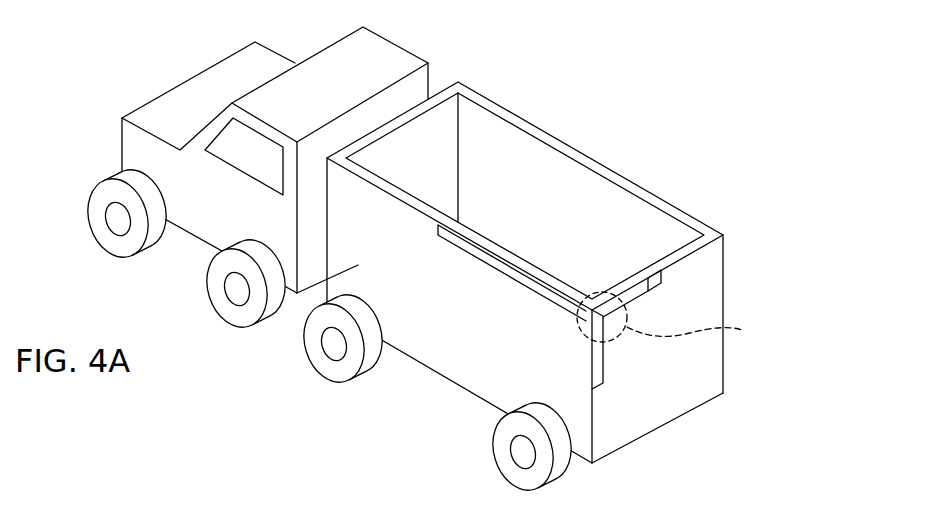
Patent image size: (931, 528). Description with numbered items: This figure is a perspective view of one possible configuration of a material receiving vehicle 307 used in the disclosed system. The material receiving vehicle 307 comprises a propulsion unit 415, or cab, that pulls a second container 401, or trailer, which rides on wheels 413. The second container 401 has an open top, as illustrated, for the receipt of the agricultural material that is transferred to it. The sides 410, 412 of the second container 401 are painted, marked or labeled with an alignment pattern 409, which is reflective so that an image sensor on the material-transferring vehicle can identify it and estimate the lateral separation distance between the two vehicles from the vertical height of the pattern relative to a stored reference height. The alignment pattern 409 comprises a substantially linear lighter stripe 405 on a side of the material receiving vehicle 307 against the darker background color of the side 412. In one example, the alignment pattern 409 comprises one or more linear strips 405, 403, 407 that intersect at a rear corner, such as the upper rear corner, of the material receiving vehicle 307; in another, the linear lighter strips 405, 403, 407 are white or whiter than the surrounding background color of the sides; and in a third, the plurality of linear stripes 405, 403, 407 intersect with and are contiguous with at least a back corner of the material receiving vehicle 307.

The material receiving vehicle 307 is at (548, 99).
The second container 401 is at (580, 212).
The linear strip 403 is at (598, 370).
The linear lighter stripe 405 is at (483, 260).
The linear strip 407 is at (647, 291).
The alignment pattern 409 is at (573, 346).
The side 410 is at (657, 378).
The side 412 is at (358, 265).
The wheels 413 is at (112, 242).
The propulsion unit 415 is at (400, 58).